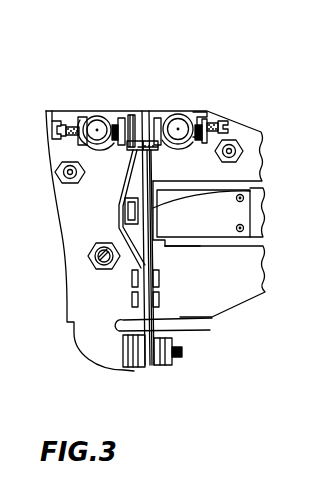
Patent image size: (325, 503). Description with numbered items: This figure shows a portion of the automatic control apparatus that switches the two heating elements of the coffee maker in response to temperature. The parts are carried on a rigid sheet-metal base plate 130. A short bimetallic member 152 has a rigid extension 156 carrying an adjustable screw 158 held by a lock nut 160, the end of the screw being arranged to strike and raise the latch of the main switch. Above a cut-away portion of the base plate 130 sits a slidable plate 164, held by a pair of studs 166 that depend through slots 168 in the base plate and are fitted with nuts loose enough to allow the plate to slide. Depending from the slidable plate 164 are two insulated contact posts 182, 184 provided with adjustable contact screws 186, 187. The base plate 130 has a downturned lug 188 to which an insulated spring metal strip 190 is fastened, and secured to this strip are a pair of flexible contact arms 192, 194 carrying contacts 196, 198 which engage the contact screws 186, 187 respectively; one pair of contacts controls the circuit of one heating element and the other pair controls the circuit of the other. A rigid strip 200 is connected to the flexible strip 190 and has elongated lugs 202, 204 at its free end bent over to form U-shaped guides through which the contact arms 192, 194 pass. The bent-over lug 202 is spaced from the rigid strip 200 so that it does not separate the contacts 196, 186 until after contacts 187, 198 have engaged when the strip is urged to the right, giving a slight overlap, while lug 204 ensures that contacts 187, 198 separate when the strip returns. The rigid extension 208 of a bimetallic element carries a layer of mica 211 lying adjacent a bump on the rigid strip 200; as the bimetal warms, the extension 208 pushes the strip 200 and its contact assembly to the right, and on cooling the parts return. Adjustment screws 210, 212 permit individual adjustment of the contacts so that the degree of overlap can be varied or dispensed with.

The base plate 130 is at (255, 277).
The bimetallic member 152 is at (258, 207).
The rigid extension 156 is at (200, 229).
The adjustable screw 158 is at (92, 252).
The lock nut 160 is at (88, 258).
The slidable plate 164 is at (80, 113).
The studs 166 is at (236, 158).
The slots 168 is at (243, 152).
The contact post 182 is at (97, 114).
The contact post 184 is at (180, 118).
The adjustable contact screw 186 is at (122, 110).
The adjustable contact screw 187 is at (158, 116).
The downturned lug 188 is at (134, 370).
The spring metal strip 190 is at (180, 329).
The flexible contact arm 192 is at (127, 172).
The flexible contact arm 194 is at (150, 165).
The contact 196 is at (134, 114).
The contact 198 is at (151, 113).
The rigid strip 200 is at (132, 264).
The elongated lug 202 is at (127, 150).
The elongated lug 204 is at (158, 148).
The rigid extension 208 is at (125, 212).
The adjustment screw 210 is at (55, 112).
The mica layer 211 is at (153, 217).
The adjustment screw 212 is at (223, 117).